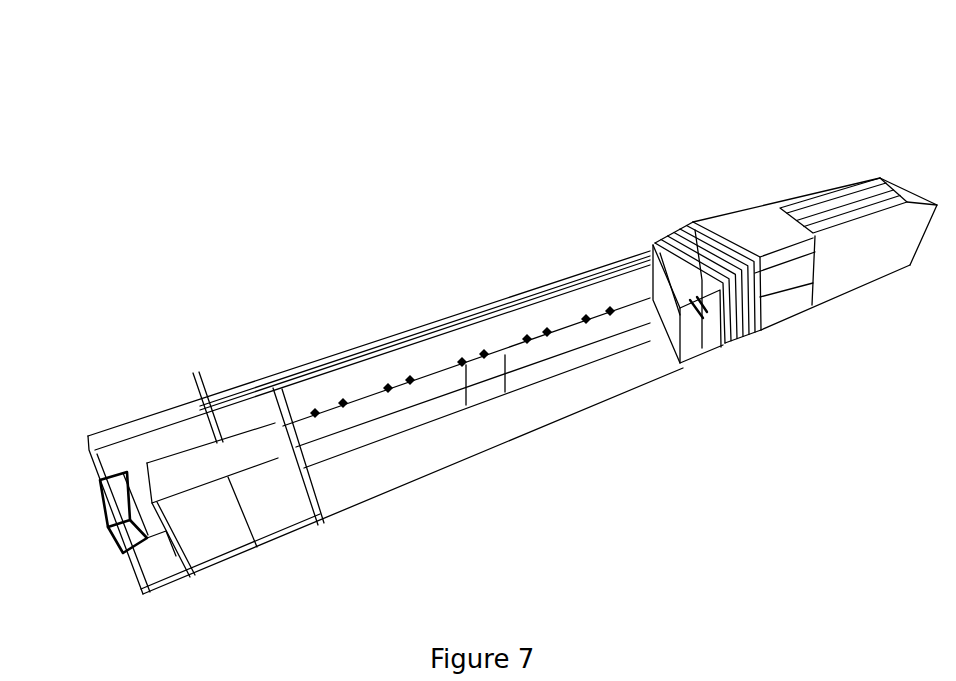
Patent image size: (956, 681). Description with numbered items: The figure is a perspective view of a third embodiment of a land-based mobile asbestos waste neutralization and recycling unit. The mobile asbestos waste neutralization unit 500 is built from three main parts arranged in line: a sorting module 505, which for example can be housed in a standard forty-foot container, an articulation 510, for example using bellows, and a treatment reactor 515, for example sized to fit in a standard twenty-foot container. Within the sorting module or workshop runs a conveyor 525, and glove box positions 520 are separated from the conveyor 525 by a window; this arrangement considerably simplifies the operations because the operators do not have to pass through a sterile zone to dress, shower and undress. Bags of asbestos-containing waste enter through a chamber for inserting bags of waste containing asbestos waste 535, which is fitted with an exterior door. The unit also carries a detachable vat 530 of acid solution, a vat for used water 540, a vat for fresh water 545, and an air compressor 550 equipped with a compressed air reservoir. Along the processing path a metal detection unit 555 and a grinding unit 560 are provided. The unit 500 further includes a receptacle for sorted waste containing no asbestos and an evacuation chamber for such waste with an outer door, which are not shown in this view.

The mobile asbestos waste neutralization unit 500 is at (372, 210).
The sorting module 505 is at (293, 291).
The articulation 510 is at (667, 166).
The treatment reactor 515 is at (802, 108).
The glove box positions 520 is at (318, 413).
The conveyor 525 is at (245, 392).
The detachable vat of acid solution 530 is at (790, 289).
The chamber for inserting bags of waste containing asbestos waste 535 is at (106, 440).
The vat for used water 540 is at (884, 255).
The vat for fresh water 545 is at (823, 201).
The air compressor 550 is at (260, 493).
The metal detection unit 555 is at (643, 268).
The grinding unit 560 is at (677, 246).